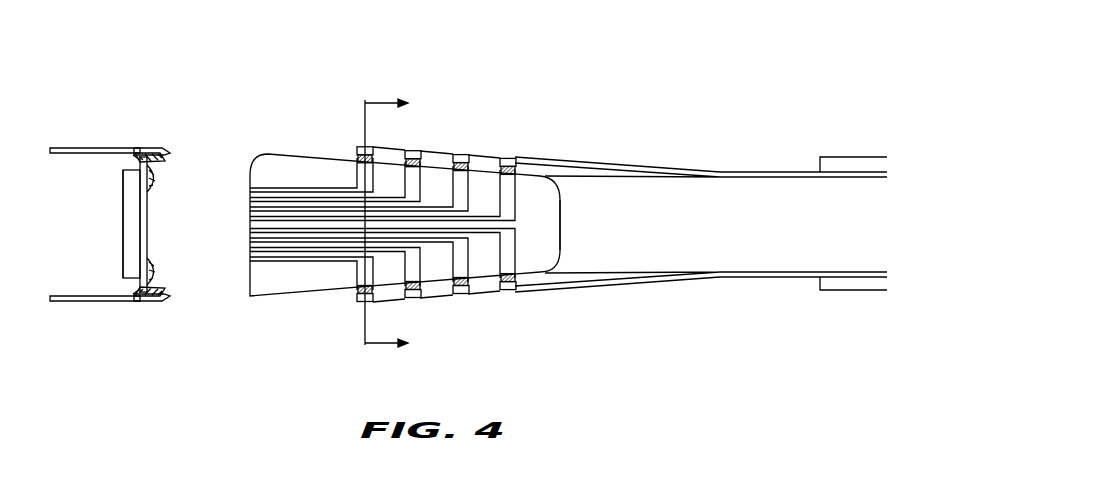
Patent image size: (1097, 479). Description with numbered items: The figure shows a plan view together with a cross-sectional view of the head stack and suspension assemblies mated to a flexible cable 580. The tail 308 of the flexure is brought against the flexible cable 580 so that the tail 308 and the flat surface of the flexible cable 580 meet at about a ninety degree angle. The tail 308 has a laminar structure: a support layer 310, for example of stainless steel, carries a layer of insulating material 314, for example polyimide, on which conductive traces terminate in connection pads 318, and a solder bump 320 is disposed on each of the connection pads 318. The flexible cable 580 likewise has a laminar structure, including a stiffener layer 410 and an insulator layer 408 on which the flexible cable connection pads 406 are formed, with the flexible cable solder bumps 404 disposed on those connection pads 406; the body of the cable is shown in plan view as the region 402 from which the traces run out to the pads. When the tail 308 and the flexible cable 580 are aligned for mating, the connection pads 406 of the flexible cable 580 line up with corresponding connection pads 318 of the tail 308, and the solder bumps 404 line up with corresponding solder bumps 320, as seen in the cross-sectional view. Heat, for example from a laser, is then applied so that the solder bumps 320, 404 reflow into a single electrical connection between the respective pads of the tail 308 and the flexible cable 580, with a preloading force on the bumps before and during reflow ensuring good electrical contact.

The tail portion 308 is at (476, 104).
The support layer 310 is at (120, 148).
The layer of insulating material 314 is at (80, 148).
The connection pads 318 is at (137, 155).
The solder bump 320 is at (160, 154).
The flexible circuit body 402 is at (285, 160).
The flexible cable solder bumps 404 is at (155, 175).
The flexible cable connection pads 406 is at (147, 190).
The insulator layer 408 is at (140, 213).
The stiffener layer 410 is at (127, 238).
The flexible cable 580 is at (552, 207).